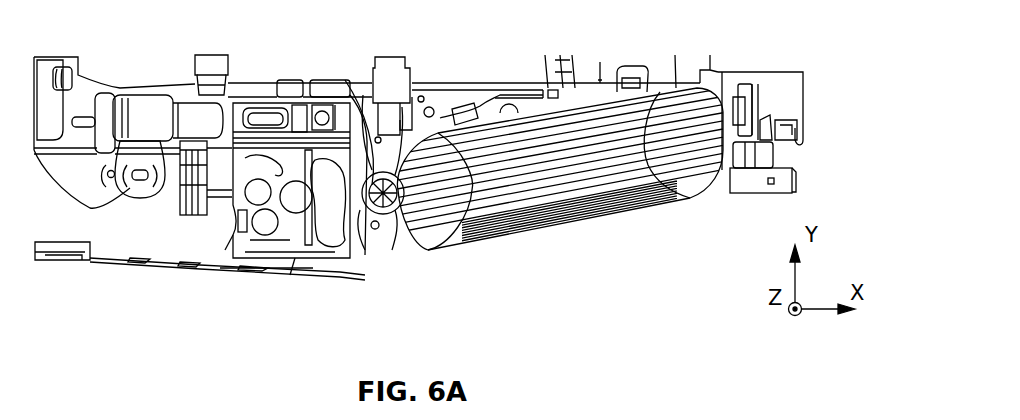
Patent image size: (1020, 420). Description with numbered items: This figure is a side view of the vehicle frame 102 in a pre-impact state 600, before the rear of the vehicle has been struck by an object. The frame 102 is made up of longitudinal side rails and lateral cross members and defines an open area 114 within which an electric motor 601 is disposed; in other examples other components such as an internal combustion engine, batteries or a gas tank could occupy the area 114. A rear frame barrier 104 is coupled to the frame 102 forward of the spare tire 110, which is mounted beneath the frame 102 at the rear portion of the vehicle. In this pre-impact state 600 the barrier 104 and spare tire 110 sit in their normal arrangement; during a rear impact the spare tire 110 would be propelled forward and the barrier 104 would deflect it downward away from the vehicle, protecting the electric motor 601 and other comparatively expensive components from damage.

The pre-impact state 600 is at (817, 83).
The frame 102 is at (203, 53).
The rear frame barrier 104 is at (345, 80).
The spare tire 110 is at (617, 215).
The open area 114 is at (182, 248).
The electric motor 601 is at (295, 258).